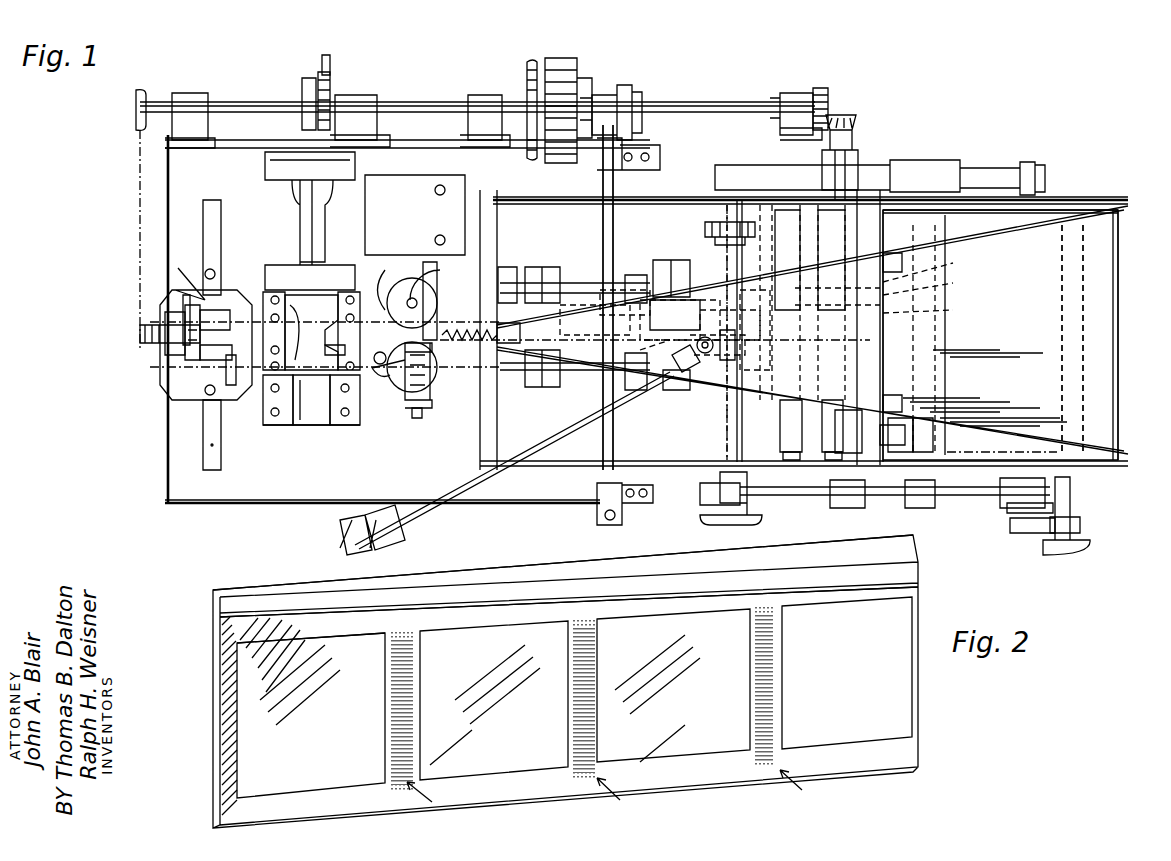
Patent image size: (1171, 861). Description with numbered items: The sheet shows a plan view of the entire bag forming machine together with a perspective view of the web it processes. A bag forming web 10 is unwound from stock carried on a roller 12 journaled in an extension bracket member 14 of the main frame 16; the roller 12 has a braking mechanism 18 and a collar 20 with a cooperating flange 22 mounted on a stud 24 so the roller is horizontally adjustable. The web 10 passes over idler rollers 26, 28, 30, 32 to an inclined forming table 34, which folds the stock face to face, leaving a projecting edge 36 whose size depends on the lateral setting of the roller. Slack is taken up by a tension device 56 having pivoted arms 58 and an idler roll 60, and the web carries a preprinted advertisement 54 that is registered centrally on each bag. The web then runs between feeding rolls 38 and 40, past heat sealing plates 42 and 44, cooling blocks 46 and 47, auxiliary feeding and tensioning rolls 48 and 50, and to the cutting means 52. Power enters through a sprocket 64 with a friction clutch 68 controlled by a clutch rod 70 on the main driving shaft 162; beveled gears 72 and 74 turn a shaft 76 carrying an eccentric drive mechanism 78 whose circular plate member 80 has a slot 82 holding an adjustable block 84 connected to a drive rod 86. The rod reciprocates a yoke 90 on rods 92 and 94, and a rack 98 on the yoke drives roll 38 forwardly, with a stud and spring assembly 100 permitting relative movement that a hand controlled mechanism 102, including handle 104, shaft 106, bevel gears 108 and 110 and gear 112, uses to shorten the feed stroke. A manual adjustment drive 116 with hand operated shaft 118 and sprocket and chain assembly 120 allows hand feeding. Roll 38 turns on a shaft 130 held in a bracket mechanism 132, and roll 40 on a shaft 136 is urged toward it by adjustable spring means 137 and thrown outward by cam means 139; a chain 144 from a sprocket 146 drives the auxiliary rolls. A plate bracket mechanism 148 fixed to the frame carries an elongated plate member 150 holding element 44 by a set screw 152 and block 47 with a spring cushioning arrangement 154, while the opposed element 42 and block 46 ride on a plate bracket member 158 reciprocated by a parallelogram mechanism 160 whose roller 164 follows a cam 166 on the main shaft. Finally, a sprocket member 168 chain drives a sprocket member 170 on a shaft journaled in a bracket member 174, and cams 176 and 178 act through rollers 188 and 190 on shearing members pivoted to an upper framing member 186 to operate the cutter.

In FIG. 2, the bag forming web 10 is at (206, 684).
In FIG. 1, the roller 12 is at (965, 222).
In FIG. 1, the extension bracket member 14 is at (955, 168).
In FIG. 1, the main frame 16 is at (650, 502).
In FIG. 1, the braking mechanism 18 is at (1008, 513).
In FIG. 1, the collar 20 is at (1010, 535).
In FIG. 1, the flange 22 is at (1080, 525).
In FIG. 1, the stud 24 is at (1070, 510).
In FIG. 1, the idler roller 26 is at (930, 437).
In FIG. 1, the idler roller 28 is at (830, 418).
In FIG. 1, the idler roller 30 is at (790, 440).
In FIG. 1, the idler roller 32 is at (1083, 313).
In FIG. 1, the inclined forming table 34 is at (1100, 383).
In FIG. 2, the projecting edge 36 is at (225, 603).
In FIG. 1, the main feeding roll 38 is at (434, 285).
In FIG. 1, the feeding roll 40 is at (436, 392).
In FIG. 1, the heat sealing plate 42 is at (345, 317).
In FIG. 1, the heat sealing plate 44 is at (342, 353).
In FIG. 1, the cooling block 46 is at (264, 312).
In FIG. 1, the cooling block 47 is at (270, 352).
In FIG. 1, the auxiliary feeding and tensioning roll 48 is at (228, 290).
In FIG. 1, the auxiliary feeding and tensioning roll 50 is at (231, 368).
In FIG. 1, the cutting means 52 is at (200, 330).
In FIG. 2, the advertisement 54 is at (275, 650).
In FIG. 1, the tension device 56 is at (906, 428).
In FIG. 1, the bearing 58 is at (942, 460).
In FIG. 1, the idler roll 60 is at (893, 455).
In FIG. 1, the sprocket 64 is at (527, 80).
In FIG. 1, the friction clutch 68 is at (568, 60).
In FIG. 1, the clutch rod 70 is at (614, 422).
In FIG. 1, the beveled gear 72 is at (828, 98).
In FIG. 1, the beveled gear 74 is at (851, 122).
In FIG. 1, the shaft 76 is at (795, 288).
In FIG. 1, the eccentric drive mechanism 78 is at (790, 308).
In FIG. 1, the circular plate member 80 is at (929, 284).
In FIG. 1, the slot 82 is at (929, 270).
In FIG. 1, the block 84 is at (929, 310).
In FIG. 1, the drive rod 86 is at (735, 345).
In FIG. 1, the yoke 90 is at (565, 280).
In FIG. 1, the rod 92 is at (572, 368).
In FIG. 1, the rod 94 is at (575, 290).
In FIG. 1, the rack 98 is at (462, 328).
In FIG. 1, the stud and spring assembly 100 is at (503, 300).
In FIG. 1, the hand controlled mechanism 102 is at (708, 386).
In FIG. 1, the handle 104 is at (345, 530).
In FIG. 1, the shaft 106 is at (558, 426).
In FIG. 1, the bevel gear 108 is at (714, 364).
In FIG. 1, the bevel gear 110 is at (692, 340).
In FIG. 1, the gear 112 is at (690, 283).
In FIG. 1, the manual adjustment drive 116 is at (765, 518).
In FIG. 1, the hand operated shaft 118 is at (726, 437).
In FIG. 1, the sprocket and chain assembly 120 is at (750, 238).
In FIG. 1, the shaft 130 is at (405, 310).
In FIG. 1, the bracket mechanism 132 is at (415, 215).
In FIG. 1, the shaft 136 is at (438, 408).
In FIG. 1, the adjustable spring means 137 is at (416, 418).
In FIG. 1, the cam means 139 is at (392, 380).
In FIG. 1, the chain 144 is at (312, 375).
In FIG. 1, the sprocket 146 is at (400, 277).
In FIG. 1, the plate bracket mechanism 148 is at (310, 438).
In FIG. 1, the elongated plate member 150 is at (310, 378).
In FIG. 1, the set screw 152 is at (348, 380).
In FIG. 1, the spring cushioning arrangement 154 is at (264, 372).
In FIG. 1, the plate bracket member 158 is at (305, 318).
In FIG. 1, the parallelogram mechanism 160 is at (285, 216).
In FIG. 1, the main driving shaft 162 is at (398, 102).
In FIG. 1, the roller 164 is at (330, 86).
In FIG. 1, the cam 166 is at (323, 58).
In FIG. 1, the sprocket member 168 is at (135, 106).
In FIG. 1, the sprocket member 170 is at (140, 332).
In FIG. 1, the bracket member 174 is at (165, 355).
In FIG. 1, the cam 176 is at (200, 358).
In FIG. 1, the cam 178 is at (183, 313).
In FIG. 1, the upper framing member 186 is at (202, 443).
In FIG. 1, the roller 188 is at (195, 272).
In FIG. 1, the roller 190 is at (186, 360).